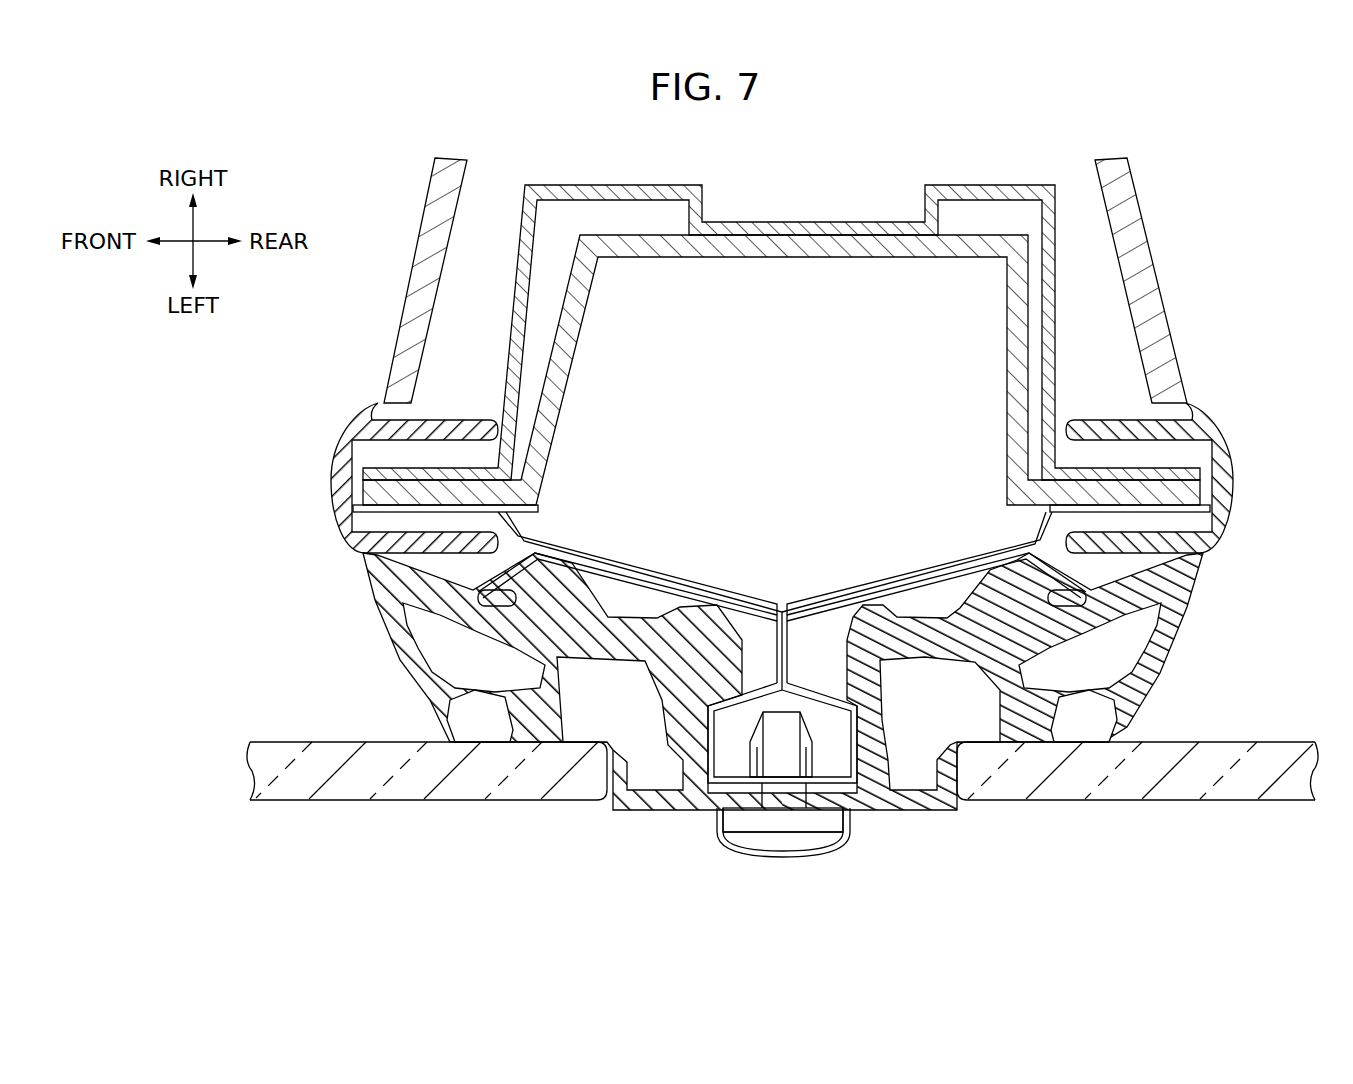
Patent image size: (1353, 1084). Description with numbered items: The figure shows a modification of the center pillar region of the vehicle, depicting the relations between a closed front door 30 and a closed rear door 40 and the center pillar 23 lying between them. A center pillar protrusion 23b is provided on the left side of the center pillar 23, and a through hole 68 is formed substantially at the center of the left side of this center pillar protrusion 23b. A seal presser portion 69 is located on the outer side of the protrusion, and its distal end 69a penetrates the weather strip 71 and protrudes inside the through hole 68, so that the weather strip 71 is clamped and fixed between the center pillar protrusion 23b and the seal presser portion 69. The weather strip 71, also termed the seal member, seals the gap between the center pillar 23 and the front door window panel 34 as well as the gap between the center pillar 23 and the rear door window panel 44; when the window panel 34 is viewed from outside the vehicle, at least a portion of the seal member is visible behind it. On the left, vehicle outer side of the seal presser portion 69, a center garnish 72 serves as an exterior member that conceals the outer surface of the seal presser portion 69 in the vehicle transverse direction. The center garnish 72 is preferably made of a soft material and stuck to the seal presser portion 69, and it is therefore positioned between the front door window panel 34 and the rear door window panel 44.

The center pillar 23 is at (780, 290).
The center pillar protrusion 23b is at (813, 707).
The front door 30 is at (427, 824).
The window panel 34 is at (389, 797).
The rear door 40 is at (1137, 825).
The window panel 44 is at (1124, 800).
The through hole 68 is at (797, 793).
The seal presser portion 69 is at (768, 837).
The distal end 69a is at (780, 717).
The weather strip 71 is at (1175, 608).
The center garnish 72 is at (728, 850).